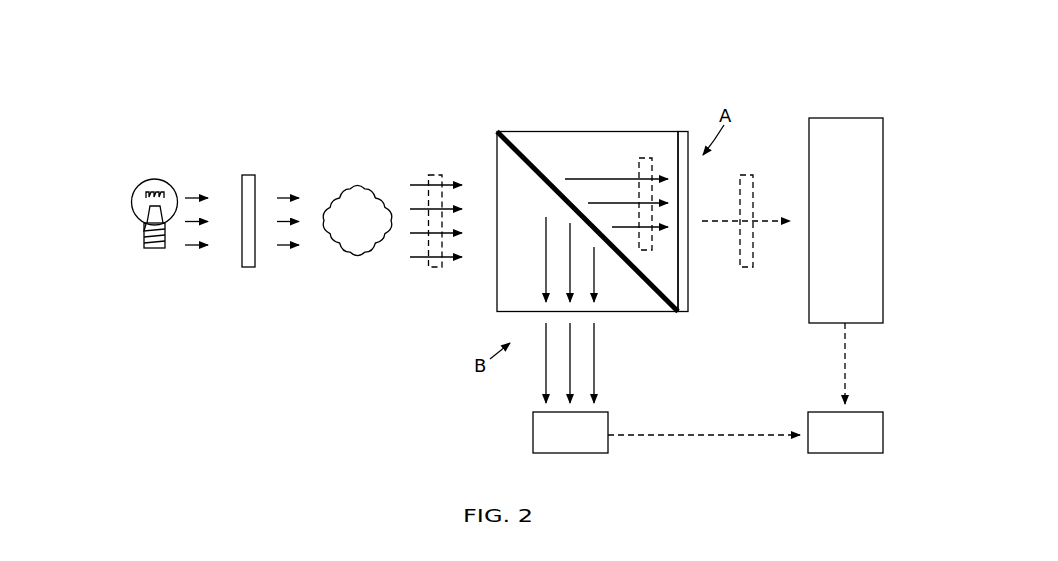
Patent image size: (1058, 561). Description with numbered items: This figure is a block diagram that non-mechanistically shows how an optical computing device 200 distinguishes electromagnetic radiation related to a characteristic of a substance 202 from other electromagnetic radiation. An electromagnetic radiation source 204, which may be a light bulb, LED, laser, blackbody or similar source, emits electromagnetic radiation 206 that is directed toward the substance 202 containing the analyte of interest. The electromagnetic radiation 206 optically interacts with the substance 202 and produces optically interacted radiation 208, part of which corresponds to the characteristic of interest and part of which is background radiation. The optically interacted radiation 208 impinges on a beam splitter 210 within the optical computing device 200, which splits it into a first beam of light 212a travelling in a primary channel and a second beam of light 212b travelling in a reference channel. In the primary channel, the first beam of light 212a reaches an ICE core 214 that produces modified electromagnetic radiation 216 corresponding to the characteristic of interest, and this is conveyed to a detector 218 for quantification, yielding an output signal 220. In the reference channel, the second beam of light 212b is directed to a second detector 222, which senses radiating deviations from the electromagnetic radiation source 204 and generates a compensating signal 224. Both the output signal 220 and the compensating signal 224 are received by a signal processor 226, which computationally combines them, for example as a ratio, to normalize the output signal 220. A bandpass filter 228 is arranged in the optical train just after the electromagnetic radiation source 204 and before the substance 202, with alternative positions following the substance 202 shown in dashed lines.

The optical computing device 200 is at (390, 70).
The substance 202 is at (372, 231).
The electromagnetic radiation source 204 is at (156, 180).
The electromagnetic radiation 206 is at (188, 246).
The optically interacted radiation 208 is at (413, 183).
The beam splitter 210 is at (524, 140).
The first beam of light 212a is at (603, 179).
The second beam of light 212b is at (545, 272).
The ICE core 214 is at (682, 138).
The modified electromagnetic radiation 216 is at (769, 217).
The detector 218 is at (860, 232).
The output signal 220 is at (843, 373).
The second detector 222 is at (585, 442).
The compensating signal 224 is at (697, 435).
The signal processor 226 is at (860, 442).
The bandpass filter 228 is at (248, 174).